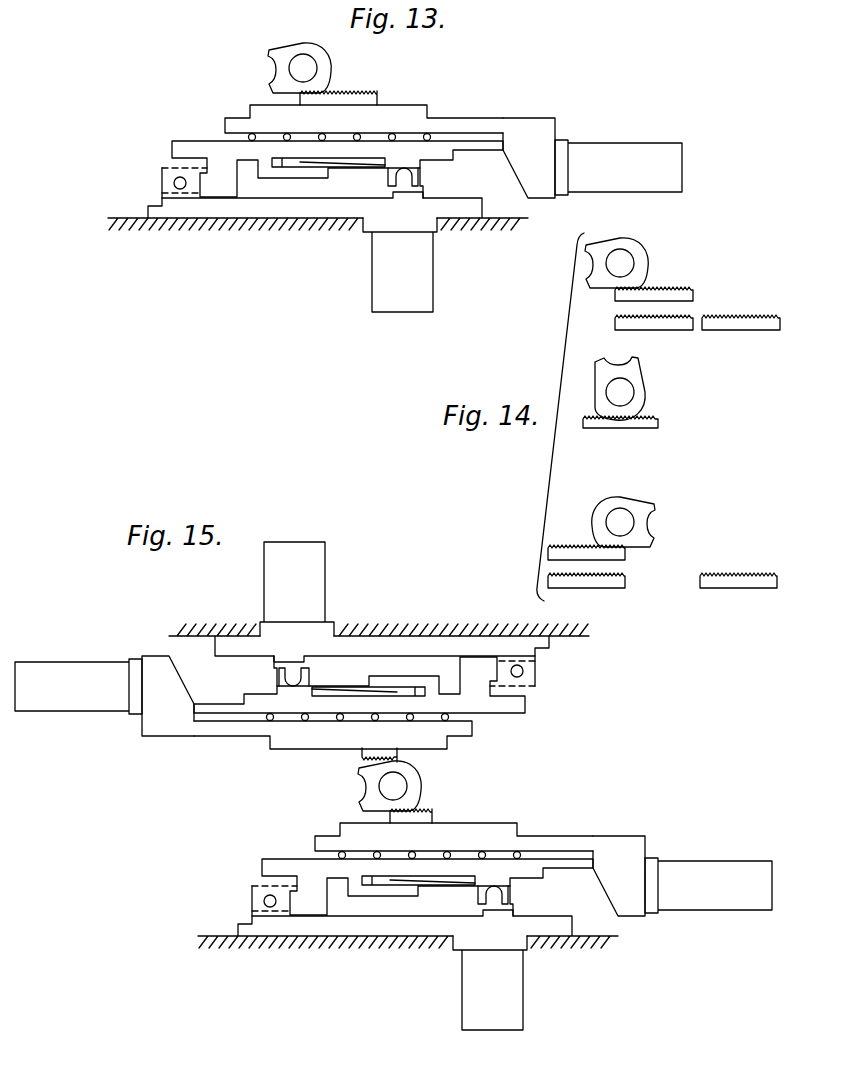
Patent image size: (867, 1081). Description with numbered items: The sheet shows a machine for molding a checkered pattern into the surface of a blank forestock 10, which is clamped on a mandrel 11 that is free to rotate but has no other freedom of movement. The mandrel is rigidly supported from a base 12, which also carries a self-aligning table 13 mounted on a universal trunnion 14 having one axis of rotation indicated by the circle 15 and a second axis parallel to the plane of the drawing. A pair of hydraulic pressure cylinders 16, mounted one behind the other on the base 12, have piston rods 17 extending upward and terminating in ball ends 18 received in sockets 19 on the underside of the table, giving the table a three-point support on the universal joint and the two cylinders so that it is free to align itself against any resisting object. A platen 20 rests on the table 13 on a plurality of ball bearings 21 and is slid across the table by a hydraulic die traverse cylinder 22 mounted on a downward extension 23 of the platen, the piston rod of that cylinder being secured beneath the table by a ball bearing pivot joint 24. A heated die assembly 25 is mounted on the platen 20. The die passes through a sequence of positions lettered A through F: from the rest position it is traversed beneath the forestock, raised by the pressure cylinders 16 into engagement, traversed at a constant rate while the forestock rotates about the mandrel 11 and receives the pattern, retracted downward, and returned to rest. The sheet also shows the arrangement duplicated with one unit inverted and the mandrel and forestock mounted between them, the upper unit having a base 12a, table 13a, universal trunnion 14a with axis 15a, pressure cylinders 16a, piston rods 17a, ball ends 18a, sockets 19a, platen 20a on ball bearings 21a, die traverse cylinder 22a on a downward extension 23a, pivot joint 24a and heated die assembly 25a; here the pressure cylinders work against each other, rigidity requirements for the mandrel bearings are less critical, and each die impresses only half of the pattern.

In FIG. 13, the blank forestock 10 is at (321, 56).
In FIG. 14, the blank forestock 10 is at (636, 250).
In FIG. 15, the blank forestock 10 is at (420, 768).
In FIG. 13, the mandrel 11 is at (312, 63).
In FIG. 14, the mandrel 11 is at (628, 262).
In FIG. 15, the mandrel 11 is at (384, 787).
In FIG. 13, the base 12 is at (126, 217).
In FIG. 15, the base 12 is at (215, 934).
In FIG. 13, the self-aligning table 13 is at (177, 145).
In FIG. 15, the self-aligning table 13 is at (268, 861).
In FIG. 13, the universal trunnion 14 is at (164, 171).
In FIG. 15, the universal trunnion 14 is at (253, 889).
In FIG. 13, the axis of rotation 15 is at (174, 183).
In FIG. 15, the axis of rotation 15 is at (264, 900).
In FIG. 13, the hydraulic pressure cylinders 16 is at (372, 262).
In FIG. 15, the hydraulic pressure cylinders 16 is at (462, 984).
In FIG. 13, the piston rods 17 is at (417, 190).
In FIG. 15, the piston rods 17 is at (506, 908).
In FIG. 13, the ball ends 18 is at (393, 183).
In FIG. 15, the ball ends 18 is at (483, 901).
In FIG. 13, the sockets 19 is at (385, 170).
In FIG. 15, the sockets 19 is at (476, 888).
In FIG. 13, the platen 20 is at (422, 108).
In FIG. 15, the platen 20 is at (512, 827).
In FIG. 13, the ball bearings 21 is at (287, 134).
In FIG. 15, the ball bearings 21 is at (377, 853).
In FIG. 13, the hydraulic die traverse cylinder 22 is at (660, 147).
In FIG. 15, the hydraulic die traverse cylinder 22 is at (700, 866).
In FIG. 13, the downward extension 23 is at (548, 133).
In FIG. 15, the downward extension 23 is at (638, 843).
In FIG. 13, the ball bearing pivot joint 24 is at (301, 165).
In FIG. 15, the ball bearing pivot joint 24 is at (391, 883).
In FIG. 13, the heated die assembly 25 is at (375, 97).
In FIG. 14, the heated die assembly 25 is at (721, 318).
In FIG. 15, the heated die assembly 25 is at (420, 819).
In FIG. 15, the base 12a is at (563, 634).
In FIG. 15, the self-aligning table 13a is at (522, 707).
In FIG. 15, the universal trunnion 14a is at (530, 669).
In FIG. 15, the axis of rotation 15a is at (523, 675).
In FIG. 15, the hydraulic pressure cylinders 16a is at (318, 572).
In FIG. 15, the piston rods 17a is at (287, 663).
In FIG. 15, the ball ends 18a is at (297, 681).
In FIG. 15, the sockets 19a is at (314, 686).
In FIG. 15, the platen 20a is at (275, 748).
In FIG. 15, the ball bearings 21a is at (448, 722).
In FIG. 15, the hydraulic die traverse cylinder 22a is at (45, 668).
In FIG. 15, the downward extension 23a is at (142, 727).
In FIG. 15, the ball bearing pivot joint 24a is at (398, 690).
In FIG. 15, the heated die assembly 25a is at (360, 755).